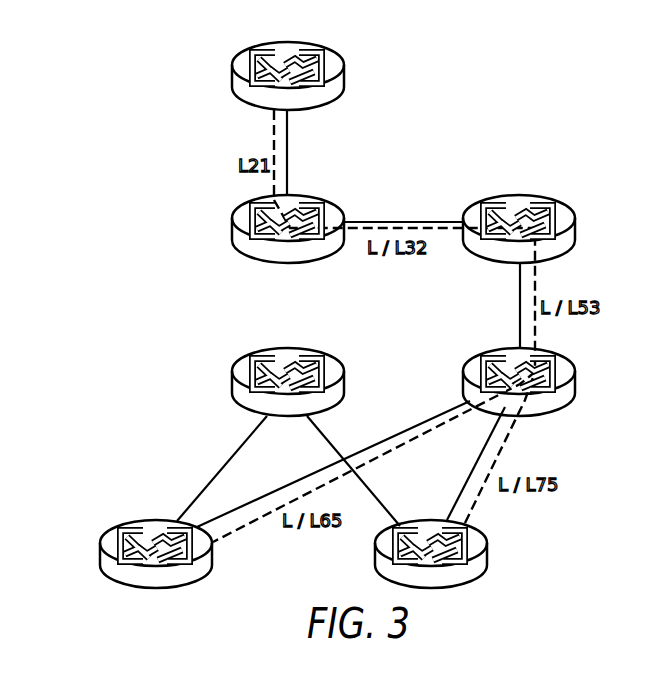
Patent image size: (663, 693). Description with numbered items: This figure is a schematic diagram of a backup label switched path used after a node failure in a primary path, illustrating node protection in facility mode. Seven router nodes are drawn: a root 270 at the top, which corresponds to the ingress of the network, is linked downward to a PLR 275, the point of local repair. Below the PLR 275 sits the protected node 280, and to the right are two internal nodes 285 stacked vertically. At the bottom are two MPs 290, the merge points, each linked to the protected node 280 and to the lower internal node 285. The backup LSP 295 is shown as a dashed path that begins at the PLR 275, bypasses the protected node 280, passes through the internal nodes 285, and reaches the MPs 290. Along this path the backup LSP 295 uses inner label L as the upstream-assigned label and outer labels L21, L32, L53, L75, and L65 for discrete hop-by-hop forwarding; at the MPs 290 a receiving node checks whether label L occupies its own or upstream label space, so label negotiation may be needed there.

The root 270 is at (232, 60).
The PLR 275 is at (232, 216).
The protected node 280 is at (232, 365).
The internal nodes 285 is at (574, 208).
The MPs 290 is at (131, 522).
The backup LSP 295 is at (273, 131).